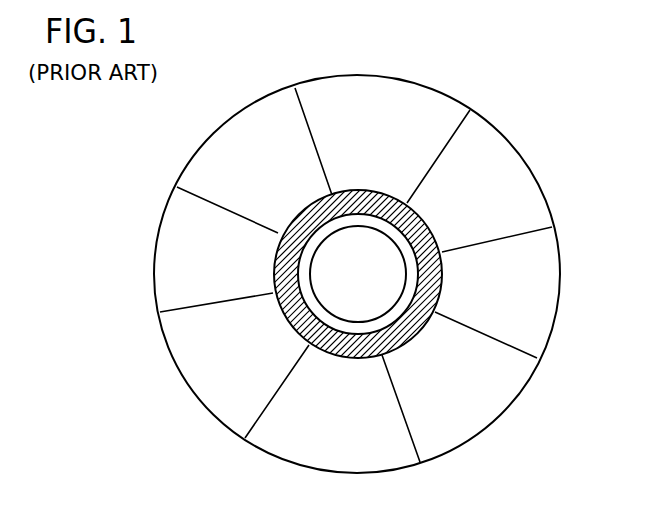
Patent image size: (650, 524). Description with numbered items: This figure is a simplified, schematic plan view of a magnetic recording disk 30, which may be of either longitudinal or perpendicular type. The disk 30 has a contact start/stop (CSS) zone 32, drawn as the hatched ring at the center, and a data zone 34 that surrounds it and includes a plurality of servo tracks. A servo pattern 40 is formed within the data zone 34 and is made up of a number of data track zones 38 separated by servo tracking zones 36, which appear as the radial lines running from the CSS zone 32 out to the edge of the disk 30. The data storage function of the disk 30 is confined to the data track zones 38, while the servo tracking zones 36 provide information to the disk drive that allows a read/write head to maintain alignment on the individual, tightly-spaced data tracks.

The magnetic recording disk 30 is at (544, 112).
The contact start/stop (CSS) zone 32 is at (433, 285).
The data zone 34 is at (480, 378).
The servo tracking zones 36 is at (218, 203).
The data track zones 38 is at (396, 109).
The servo pattern 40 is at (217, 263).